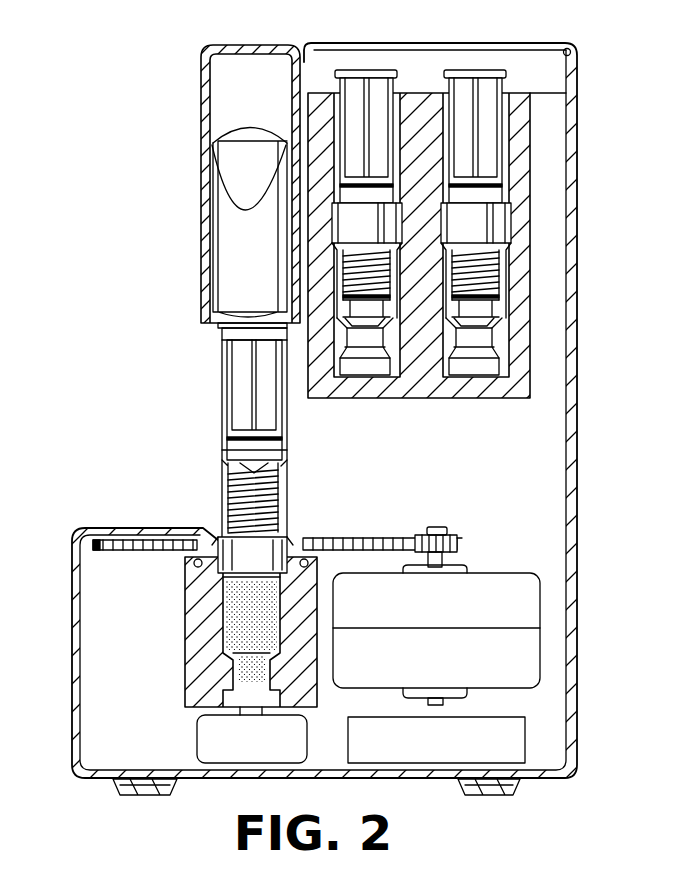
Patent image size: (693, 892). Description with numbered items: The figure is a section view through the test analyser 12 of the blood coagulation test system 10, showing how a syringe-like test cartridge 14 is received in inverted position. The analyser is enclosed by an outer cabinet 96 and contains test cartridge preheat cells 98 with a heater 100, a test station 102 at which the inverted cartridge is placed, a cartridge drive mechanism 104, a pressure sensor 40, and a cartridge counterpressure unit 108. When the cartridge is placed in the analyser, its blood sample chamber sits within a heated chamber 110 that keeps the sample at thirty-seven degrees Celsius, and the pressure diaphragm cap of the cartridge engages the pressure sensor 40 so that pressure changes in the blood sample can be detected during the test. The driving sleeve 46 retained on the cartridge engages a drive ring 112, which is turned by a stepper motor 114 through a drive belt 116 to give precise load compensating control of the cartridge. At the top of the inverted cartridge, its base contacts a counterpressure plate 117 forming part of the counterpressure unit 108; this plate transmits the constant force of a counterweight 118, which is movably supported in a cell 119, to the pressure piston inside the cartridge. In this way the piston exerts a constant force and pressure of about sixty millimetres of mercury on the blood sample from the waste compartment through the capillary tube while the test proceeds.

The blood coagulation test system 10 is at (118, 123).
The test analyser 12 is at (573, 357).
The test cartridge 14 is at (240, 390).
The pressure sensor 40 is at (210, 738).
The driving sleeve 46 is at (282, 540).
The outer cabinet 96 is at (575, 265).
The test cartridge preheat cells 98 is at (495, 192).
The heater 100 is at (520, 232).
The test station 102 is at (198, 432).
The cartridge drive mechanism 104 is at (489, 587).
The cartridge counterpressure unit 108 is at (197, 184).
The heated chamber 110 is at (193, 636).
The drive ring 112 is at (257, 516).
The stepper motor 114 is at (525, 604).
The drive belt 116 is at (408, 538).
The counterpressure plate 117 is at (212, 333).
The counterweight 118 is at (240, 235).
The cell 119 is at (205, 130).